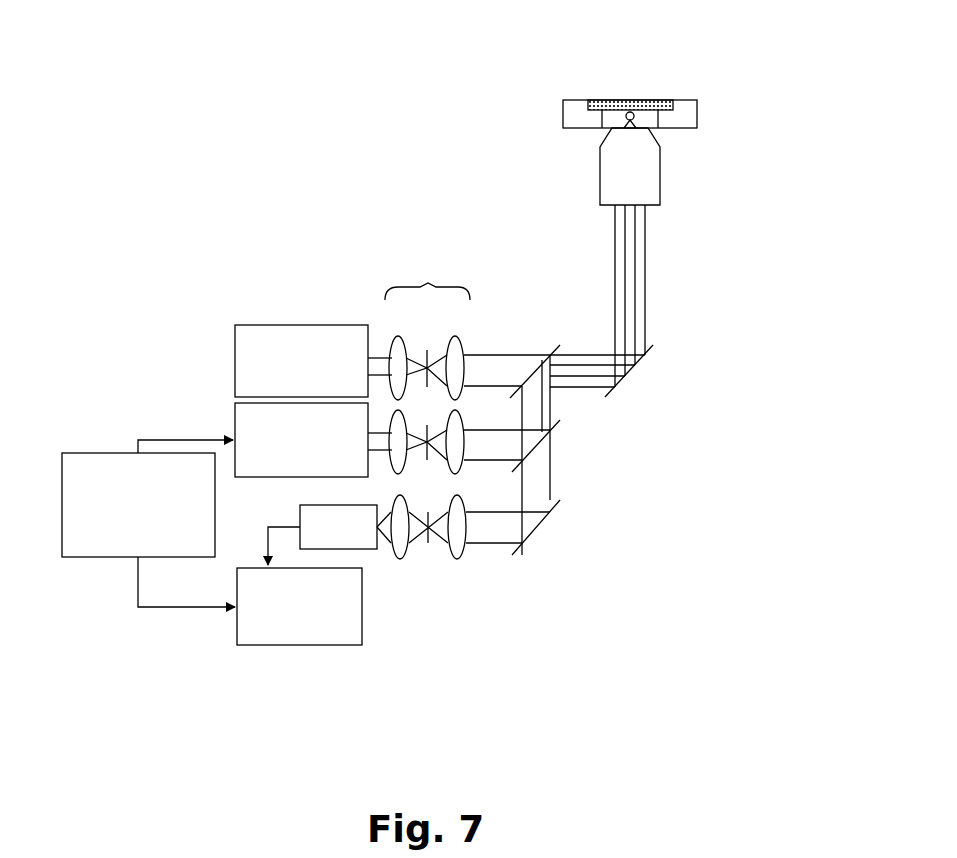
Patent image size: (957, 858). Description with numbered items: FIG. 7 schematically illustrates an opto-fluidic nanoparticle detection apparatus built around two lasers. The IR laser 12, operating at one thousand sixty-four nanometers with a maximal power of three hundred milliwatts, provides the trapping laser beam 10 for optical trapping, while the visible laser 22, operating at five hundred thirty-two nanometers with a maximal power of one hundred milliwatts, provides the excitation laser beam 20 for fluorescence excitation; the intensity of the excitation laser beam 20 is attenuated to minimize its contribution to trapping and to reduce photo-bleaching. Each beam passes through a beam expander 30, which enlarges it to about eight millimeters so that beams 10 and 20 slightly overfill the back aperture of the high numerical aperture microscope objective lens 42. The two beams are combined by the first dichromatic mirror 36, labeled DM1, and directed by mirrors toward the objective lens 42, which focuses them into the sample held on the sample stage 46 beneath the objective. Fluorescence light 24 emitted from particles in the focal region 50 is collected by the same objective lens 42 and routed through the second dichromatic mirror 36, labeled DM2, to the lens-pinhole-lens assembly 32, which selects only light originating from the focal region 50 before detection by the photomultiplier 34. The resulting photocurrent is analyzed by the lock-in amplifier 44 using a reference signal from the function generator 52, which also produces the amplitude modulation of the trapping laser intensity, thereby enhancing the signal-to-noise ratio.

The trapping laser beam 10 is at (380, 353).
The IR laser 12 is at (235, 338).
The excitation laser beam 20 is at (488, 462).
The visible laser 22 is at (235, 408).
The fluorescence light 24 is at (497, 545).
The beam expander 30 is at (428, 284).
The lens-pinhole-lens assembly 32 is at (420, 595).
The photomultiplier 34 is at (300, 512).
The dichromatic mirror 36 is at (528, 375).
The microscope objective lens 42 is at (660, 200).
The lock-in amplifier 44 is at (265, 647).
The sample stage 46 is at (697, 118).
The focal region 50 is at (635, 73).
The function generator 52 is at (92, 560).